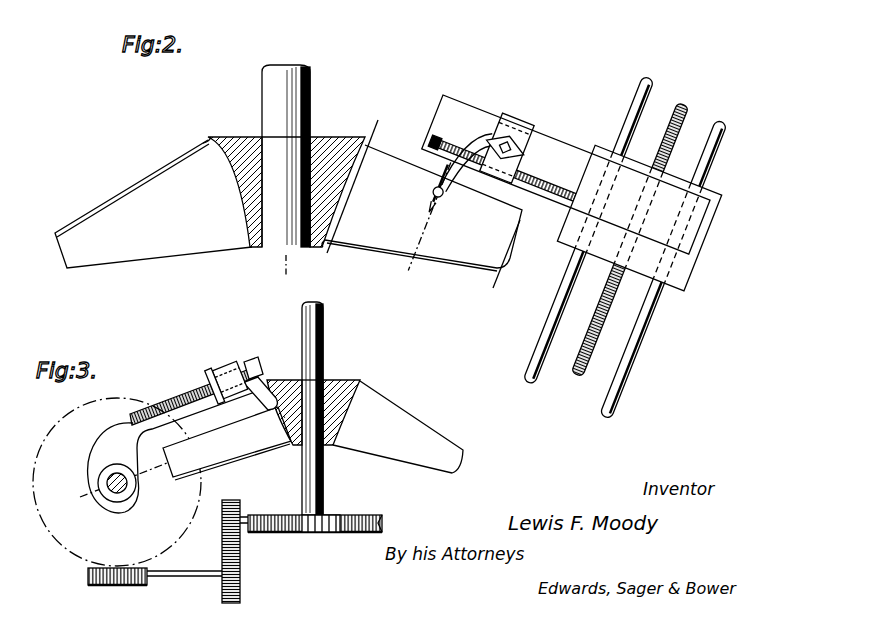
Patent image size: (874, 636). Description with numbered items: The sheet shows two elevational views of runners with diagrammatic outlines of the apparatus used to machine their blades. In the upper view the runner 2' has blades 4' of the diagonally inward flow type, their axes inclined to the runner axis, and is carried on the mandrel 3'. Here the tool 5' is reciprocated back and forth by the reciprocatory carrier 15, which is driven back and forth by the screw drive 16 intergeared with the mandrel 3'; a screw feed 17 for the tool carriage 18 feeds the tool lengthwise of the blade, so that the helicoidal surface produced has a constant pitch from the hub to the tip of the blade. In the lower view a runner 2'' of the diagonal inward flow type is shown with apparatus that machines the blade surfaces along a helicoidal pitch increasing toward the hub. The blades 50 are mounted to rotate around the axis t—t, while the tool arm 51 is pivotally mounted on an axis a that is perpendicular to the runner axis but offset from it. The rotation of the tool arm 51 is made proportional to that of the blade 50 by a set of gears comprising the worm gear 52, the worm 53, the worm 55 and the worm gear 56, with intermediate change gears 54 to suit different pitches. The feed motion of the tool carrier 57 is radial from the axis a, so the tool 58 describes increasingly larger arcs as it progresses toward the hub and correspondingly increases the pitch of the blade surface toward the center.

In FIG. 2, the runner 2' is at (278, 175).
In FIG. 2, the mandrel 3' is at (305, 156).
In FIG. 2, the blades 4' is at (288, 204).
In FIG. 2, the tool 5' is at (449, 201).
In FIG. 2, the reciprocatory carrier 15 is at (604, 143).
In FIG. 2, the screw drive 16 is at (583, 379).
In FIG. 2, the screw feed 17 is at (550, 193).
In FIG. 2, the tool carriage 18 is at (511, 121).
In FIG. 2, the axis t— t is at (302, 275).
In FIG. 3, the axis t— t is at (314, 547).
In FIG. 3, the runner 2'' is at (318, 395).
In FIG. 3, the blades 50 is at (258, 439).
In FIG. 3, the tool arm 51 is at (172, 400).
In FIG. 3, the worm gear 52 is at (352, 515).
In FIG. 3, the worm 53 is at (350, 535).
In FIG. 3, the change gears 54 is at (243, 537).
In FIG. 3, the worm 55 is at (112, 587).
In FIG. 3, the worm gear 56 is at (58, 543).
In FIG. 3, the tool carrier 57 is at (240, 364).
In FIG. 3, the tool 58 is at (255, 396).
In FIG. 3, the axis a is at (113, 494).